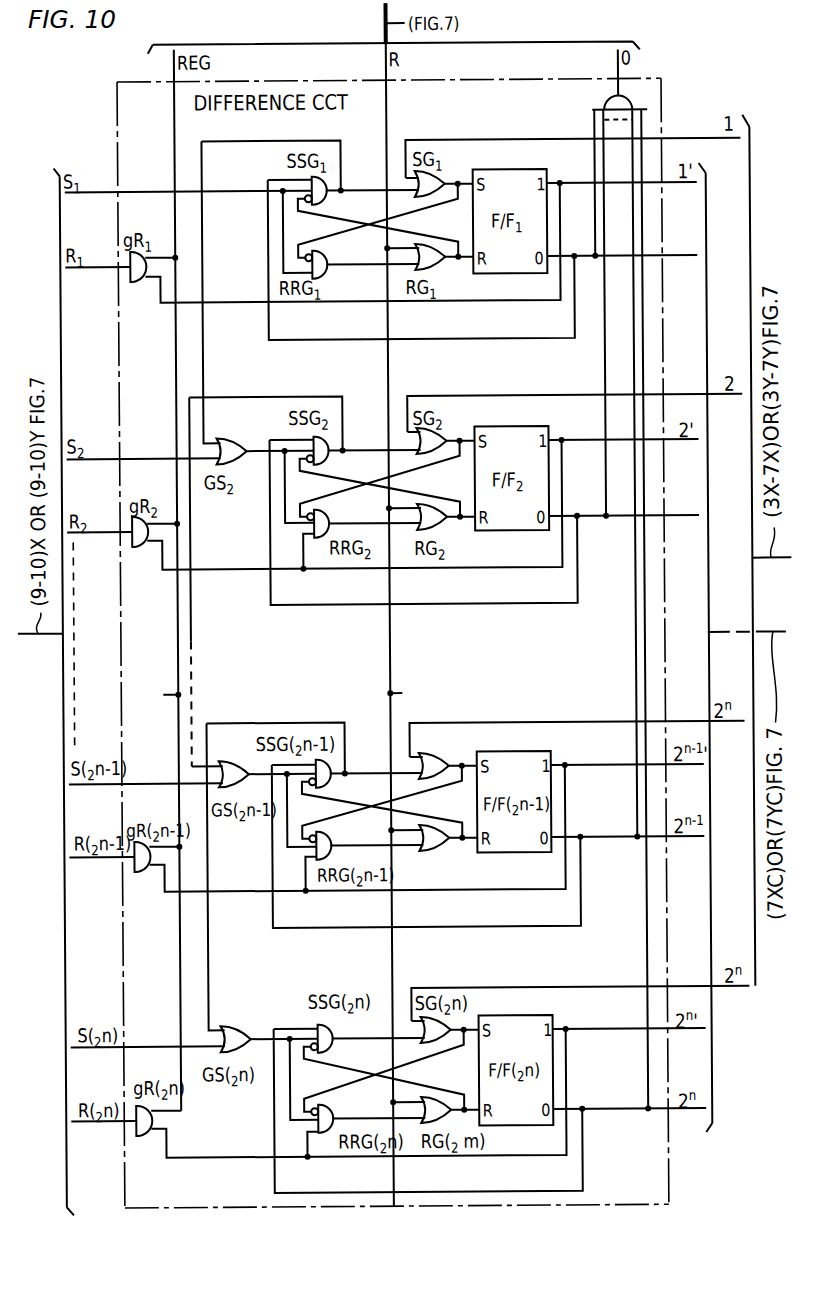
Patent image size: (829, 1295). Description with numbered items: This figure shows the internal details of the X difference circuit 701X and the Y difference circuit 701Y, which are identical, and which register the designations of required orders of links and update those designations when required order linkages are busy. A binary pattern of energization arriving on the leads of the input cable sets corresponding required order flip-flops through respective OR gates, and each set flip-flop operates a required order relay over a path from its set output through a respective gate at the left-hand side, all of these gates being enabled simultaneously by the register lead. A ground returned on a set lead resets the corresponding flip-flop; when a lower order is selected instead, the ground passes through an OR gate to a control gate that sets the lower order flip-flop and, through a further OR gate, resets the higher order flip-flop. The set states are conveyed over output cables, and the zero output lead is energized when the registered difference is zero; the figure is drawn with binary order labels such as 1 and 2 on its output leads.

The X difference circuit 701X is at (665, 104).
The Y difference circuit 701Y is at (669, 84).
The output line of flip-flop F/F1 (bit 1) 1 is at (622, 245).
The output line of flip-flop F/F2 (bit 2) 2 is at (624, 504).